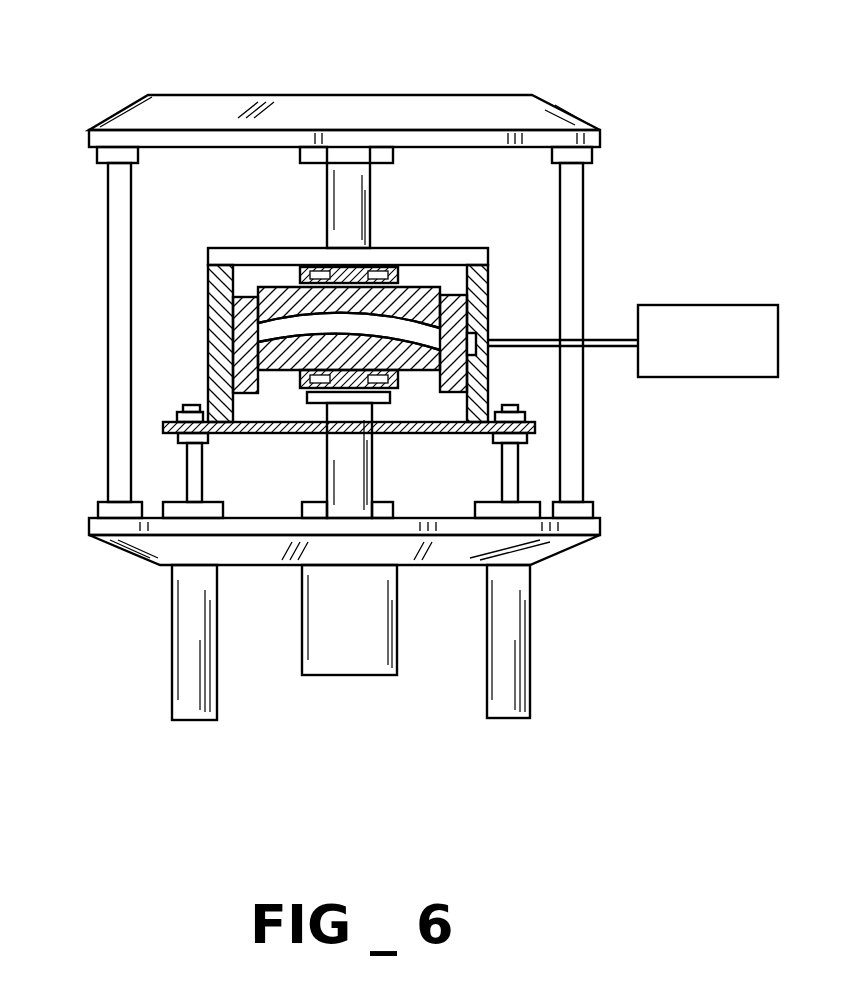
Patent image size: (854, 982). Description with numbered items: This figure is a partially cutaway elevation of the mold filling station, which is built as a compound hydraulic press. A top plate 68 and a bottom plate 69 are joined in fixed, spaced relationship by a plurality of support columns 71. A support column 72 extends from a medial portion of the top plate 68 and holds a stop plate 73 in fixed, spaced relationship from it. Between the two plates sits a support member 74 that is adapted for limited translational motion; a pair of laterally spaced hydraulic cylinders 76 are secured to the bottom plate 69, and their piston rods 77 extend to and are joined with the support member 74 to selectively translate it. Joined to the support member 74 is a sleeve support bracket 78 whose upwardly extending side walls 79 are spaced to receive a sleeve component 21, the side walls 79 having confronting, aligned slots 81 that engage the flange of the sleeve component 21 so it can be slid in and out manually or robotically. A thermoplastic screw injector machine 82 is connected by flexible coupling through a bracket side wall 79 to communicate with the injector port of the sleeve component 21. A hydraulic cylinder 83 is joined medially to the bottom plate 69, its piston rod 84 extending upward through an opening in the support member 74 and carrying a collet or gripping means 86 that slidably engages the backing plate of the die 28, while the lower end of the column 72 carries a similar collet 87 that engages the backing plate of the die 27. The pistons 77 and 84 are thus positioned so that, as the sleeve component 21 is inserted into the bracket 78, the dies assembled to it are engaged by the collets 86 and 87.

The top plate 68 is at (137, 104).
The bottom plate 69 is at (135, 544).
The support columns 71 is at (116, 195).
The support column 72 is at (368, 180).
The stop plate 73 is at (392, 250).
The support member 74 is at (478, 424).
The hydraulic cylinders 76 is at (188, 635).
The piston rods 77 is at (190, 470).
The sleeve support bracket 78 is at (200, 322).
The side walls 79 is at (216, 278).
The slots 81 is at (236, 346).
The sleeve component 21 is at (250, 316).
The die 27 is at (272, 298).
The die 28 is at (262, 365).
The collet or gripping means 86 is at (400, 380).
The collet or gripping means 87 is at (330, 278).
The thermoplastic screw injector machine 82 is at (685, 305).
The hydraulic cylinder 83 is at (343, 663).
The piston rod 84 is at (347, 458).